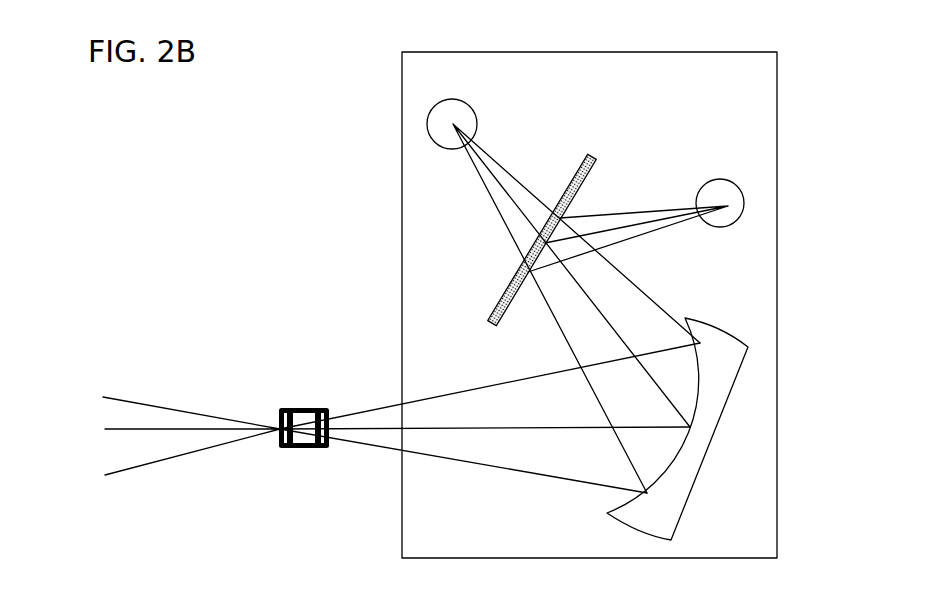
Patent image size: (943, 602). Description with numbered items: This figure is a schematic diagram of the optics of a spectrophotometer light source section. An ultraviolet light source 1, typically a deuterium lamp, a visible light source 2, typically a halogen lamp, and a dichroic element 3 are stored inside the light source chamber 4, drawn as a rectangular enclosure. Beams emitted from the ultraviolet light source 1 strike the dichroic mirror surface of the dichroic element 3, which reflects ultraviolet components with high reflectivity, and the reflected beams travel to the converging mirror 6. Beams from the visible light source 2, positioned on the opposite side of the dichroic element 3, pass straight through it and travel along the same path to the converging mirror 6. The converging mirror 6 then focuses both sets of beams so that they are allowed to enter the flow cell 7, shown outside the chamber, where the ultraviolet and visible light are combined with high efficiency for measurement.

The ultraviolet light source 1 is at (727, 180).
The visible light source 2 is at (456, 100).
The dichroic element 3 is at (494, 300).
The light source chamber 4 is at (703, 52).
The converging mirror 6 is at (678, 517).
The flow cell 7 is at (322, 449).